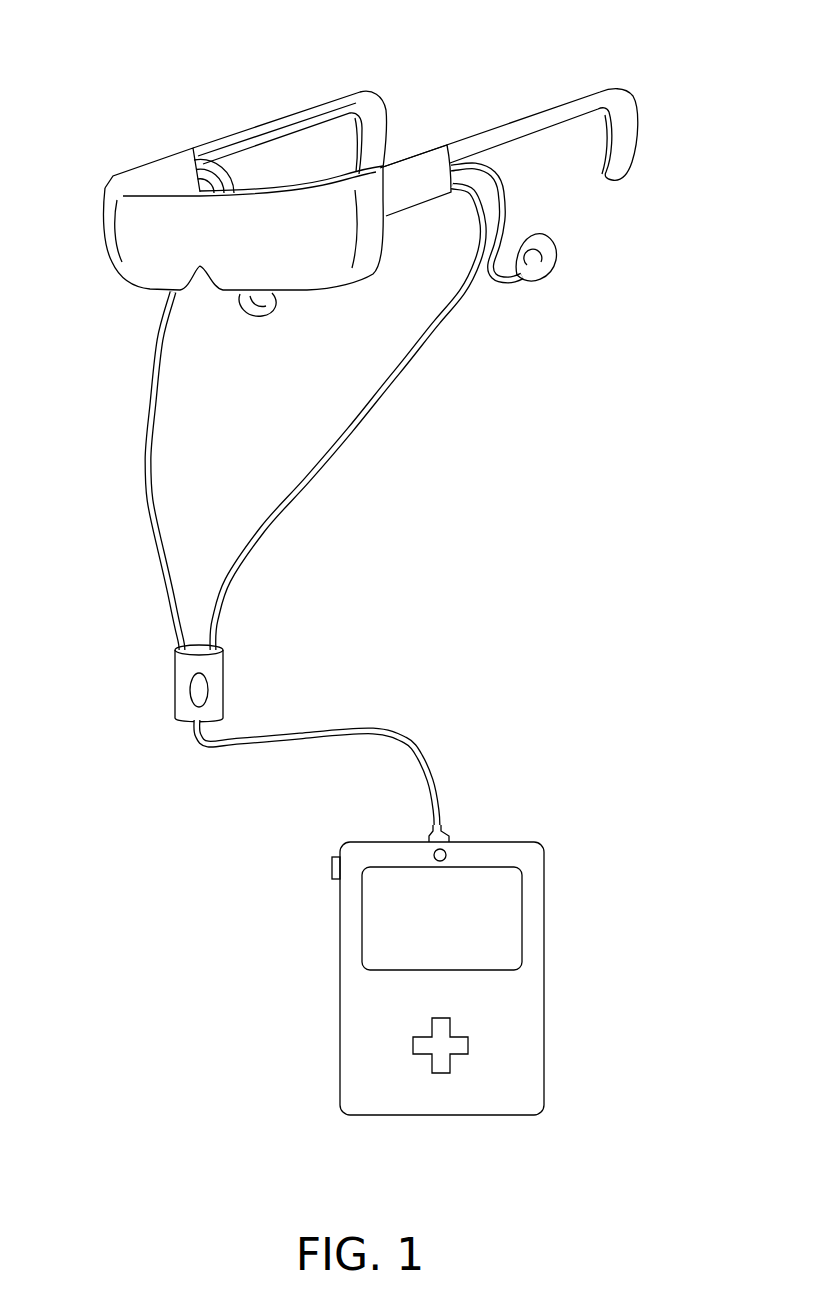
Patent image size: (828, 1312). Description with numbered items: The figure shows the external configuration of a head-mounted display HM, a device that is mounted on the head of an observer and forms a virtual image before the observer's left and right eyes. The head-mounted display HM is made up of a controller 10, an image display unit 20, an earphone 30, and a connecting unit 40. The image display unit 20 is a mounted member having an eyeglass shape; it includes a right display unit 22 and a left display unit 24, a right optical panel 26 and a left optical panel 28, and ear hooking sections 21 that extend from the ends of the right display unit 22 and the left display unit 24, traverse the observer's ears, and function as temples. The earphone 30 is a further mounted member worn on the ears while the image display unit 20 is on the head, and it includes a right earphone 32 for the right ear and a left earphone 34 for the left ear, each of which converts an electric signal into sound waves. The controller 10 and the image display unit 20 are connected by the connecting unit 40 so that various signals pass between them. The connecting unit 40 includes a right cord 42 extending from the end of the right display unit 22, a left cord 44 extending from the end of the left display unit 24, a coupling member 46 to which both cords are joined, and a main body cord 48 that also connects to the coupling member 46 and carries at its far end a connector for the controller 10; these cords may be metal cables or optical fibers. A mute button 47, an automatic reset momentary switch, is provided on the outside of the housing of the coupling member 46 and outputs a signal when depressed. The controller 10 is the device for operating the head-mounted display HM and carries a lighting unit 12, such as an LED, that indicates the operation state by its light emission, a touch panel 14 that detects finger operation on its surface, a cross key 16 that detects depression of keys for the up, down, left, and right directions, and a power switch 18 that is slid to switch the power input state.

The head-mounted display device HM is at (667, 80).
The controller 10 is at (558, 822).
The lighting unit 12 is at (446, 851).
The touch panel 14 is at (523, 914).
The cross key 16 is at (470, 1045).
The power switch 18 is at (332, 868).
The image display unit 20 is at (478, 100).
The ear hooking sections 21 is at (323, 104).
The right display unit 22 is at (150, 162).
The left display unit 24 is at (421, 204).
The right optical panel 26 is at (126, 262).
The left optical panel 28 is at (328, 277).
The earphone 30 is at (585, 298).
The right earphone 32 is at (270, 312).
The left earphone 34 is at (558, 257).
The connecting unit 40 is at (262, 632).
The right cord 42 is at (158, 403).
The left cord 44 is at (398, 380).
The coupling member 46 is at (226, 688).
The mute button 47 is at (190, 690).
The main body cord 48 is at (420, 757).